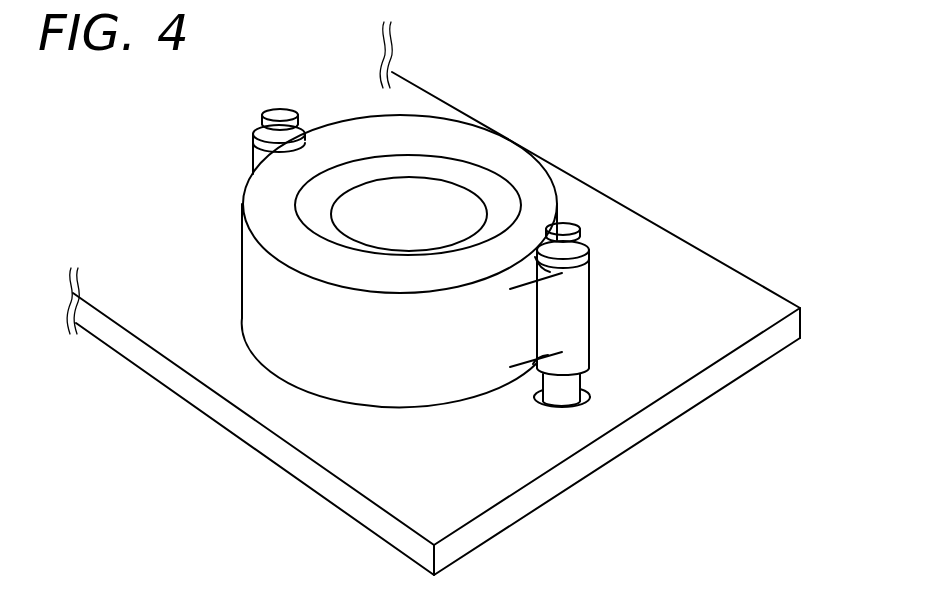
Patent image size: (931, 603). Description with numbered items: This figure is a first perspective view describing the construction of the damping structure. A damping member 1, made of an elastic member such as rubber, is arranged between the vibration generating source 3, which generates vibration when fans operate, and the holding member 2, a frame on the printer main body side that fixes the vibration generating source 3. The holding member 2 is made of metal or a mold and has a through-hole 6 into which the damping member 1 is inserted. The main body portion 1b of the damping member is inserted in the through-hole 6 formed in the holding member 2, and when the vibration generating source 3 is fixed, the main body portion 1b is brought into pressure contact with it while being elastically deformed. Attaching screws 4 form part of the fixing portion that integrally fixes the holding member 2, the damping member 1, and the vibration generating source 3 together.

The damping member 1 is at (465, 317).
The main body portion 1b is at (555, 397).
The holding member 2 is at (246, 430).
The vibration generating source 3 is at (458, 133).
The attaching screw 4 is at (277, 113).
The through-hole 6 is at (593, 395).